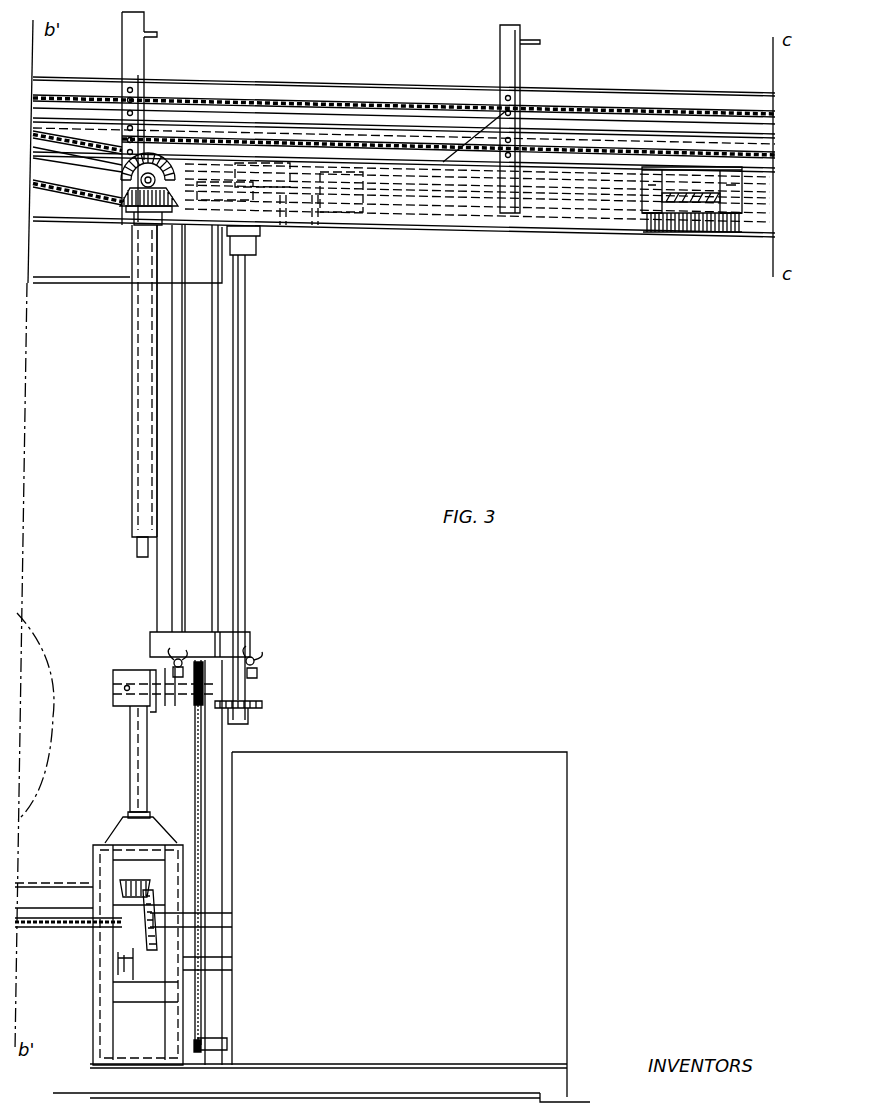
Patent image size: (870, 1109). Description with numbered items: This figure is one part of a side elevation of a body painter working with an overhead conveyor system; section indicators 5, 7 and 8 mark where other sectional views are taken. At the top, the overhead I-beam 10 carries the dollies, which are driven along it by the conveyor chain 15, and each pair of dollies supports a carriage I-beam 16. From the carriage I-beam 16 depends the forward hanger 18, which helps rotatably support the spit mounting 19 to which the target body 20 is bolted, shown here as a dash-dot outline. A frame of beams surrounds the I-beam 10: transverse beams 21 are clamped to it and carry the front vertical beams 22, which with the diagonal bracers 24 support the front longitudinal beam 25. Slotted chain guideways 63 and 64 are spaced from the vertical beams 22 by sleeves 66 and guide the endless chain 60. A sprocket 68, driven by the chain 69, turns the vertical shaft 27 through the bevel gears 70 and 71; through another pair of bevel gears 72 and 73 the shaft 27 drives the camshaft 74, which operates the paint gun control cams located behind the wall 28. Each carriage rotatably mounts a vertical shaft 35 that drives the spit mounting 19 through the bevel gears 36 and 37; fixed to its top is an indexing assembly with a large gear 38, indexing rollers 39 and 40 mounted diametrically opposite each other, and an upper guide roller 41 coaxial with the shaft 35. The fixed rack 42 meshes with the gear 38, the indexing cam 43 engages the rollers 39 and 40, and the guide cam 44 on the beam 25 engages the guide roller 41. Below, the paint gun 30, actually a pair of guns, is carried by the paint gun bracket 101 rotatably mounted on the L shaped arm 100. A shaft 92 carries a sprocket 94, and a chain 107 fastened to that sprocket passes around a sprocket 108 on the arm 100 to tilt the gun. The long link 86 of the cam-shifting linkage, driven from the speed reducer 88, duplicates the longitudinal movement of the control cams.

The section line 5 is at (440, 42).
The section line 7 is at (414, 245).
The section line 8 is at (80, 1105).
The overhead I-beam 10 is at (622, 97).
The conveyor chain 15 is at (450, 185).
The carriage I-beam 16 is at (48, 268).
The forward hanger 18 is at (156, 583).
The spit mounting 19 is at (42, 937).
The target body 20 is at (32, 635).
The transverse beam 21 is at (150, 34).
The front vertical beam 22 is at (128, 42).
The diagonal bracer 24 is at (508, 214).
The front longitudinal beam 25 is at (620, 226).
The shaft 27 is at (136, 548).
The wall 28 is at (520, 752).
The paint gun 30 is at (165, 658).
The vertical shaft 35 is at (246, 454).
The bevel gear 36 is at (263, 704).
The bevel gear 37 is at (195, 715).
The large gear 38 is at (270, 240).
The indexing roller 39 is at (225, 181).
The indexing roller 40 is at (283, 220).
The upper guide roller 41 is at (247, 172).
The fixed rack 42 is at (685, 233).
The indexing cam 43 is at (315, 222).
The guide cam 44 is at (718, 206).
The endless chain 60 is at (683, 148).
The slotted chain guideway 63 is at (66, 104).
The slotted chain guideway 64 is at (750, 158).
The sleeve 66 is at (121, 80).
The sprocket 68 is at (170, 181).
The chain 69 is at (83, 145).
The bevel gear 70 is at (130, 182).
The bevel gear 71 is at (128, 212).
The bevel gear 72 is at (115, 850).
The bevel gear 73 is at (143, 935).
The camshaft 74 is at (232, 915).
The long link 86 is at (224, 965).
The speed reducer 88 is at (152, 982).
The shaft 92 is at (225, 1042).
The sprocket 94 is at (197, 1052).
The L shaped arm 100 is at (218, 745).
The paint gun bracket 101 is at (258, 674).
The chain 107 is at (195, 760).
The sprocket 108 is at (197, 660).